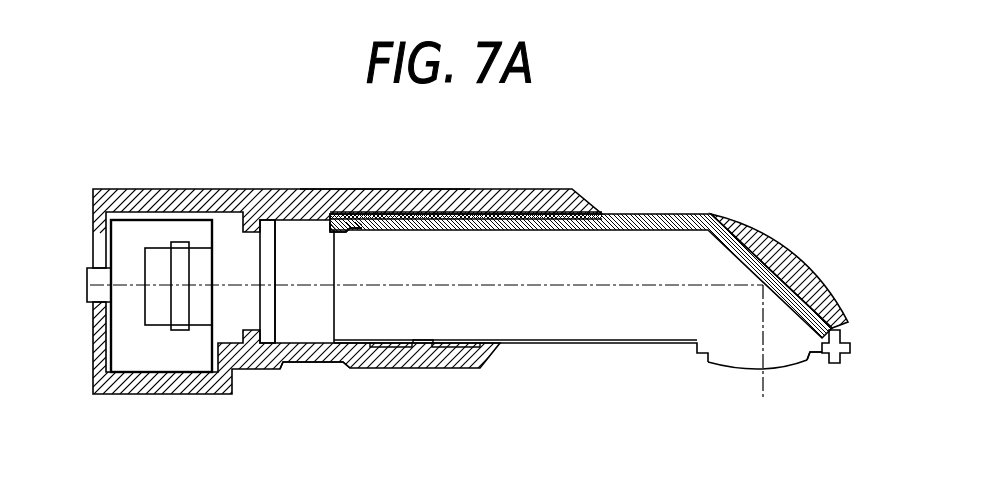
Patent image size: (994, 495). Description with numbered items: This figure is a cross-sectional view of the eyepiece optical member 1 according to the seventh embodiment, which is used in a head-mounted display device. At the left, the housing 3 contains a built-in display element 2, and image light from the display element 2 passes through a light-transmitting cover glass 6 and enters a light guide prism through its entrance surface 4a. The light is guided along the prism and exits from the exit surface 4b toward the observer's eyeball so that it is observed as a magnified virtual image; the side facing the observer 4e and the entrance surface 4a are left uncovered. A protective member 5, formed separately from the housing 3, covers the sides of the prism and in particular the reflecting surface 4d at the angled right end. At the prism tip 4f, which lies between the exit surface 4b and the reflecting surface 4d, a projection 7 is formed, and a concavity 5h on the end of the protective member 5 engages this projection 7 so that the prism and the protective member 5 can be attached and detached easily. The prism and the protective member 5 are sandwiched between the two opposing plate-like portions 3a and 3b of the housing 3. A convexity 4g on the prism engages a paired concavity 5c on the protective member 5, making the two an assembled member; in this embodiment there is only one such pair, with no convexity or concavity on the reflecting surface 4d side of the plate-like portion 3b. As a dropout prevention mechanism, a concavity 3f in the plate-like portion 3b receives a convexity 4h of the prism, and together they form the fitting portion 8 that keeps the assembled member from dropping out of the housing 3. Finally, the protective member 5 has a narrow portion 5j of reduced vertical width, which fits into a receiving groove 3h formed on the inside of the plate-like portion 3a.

The eyepiece optical member 1 is at (545, 148).
The display element 2 is at (89, 286).
The housing 3 is at (214, 188).
The plate-like portion 3a is at (376, 188).
The plate-like portion 3b is at (330, 369).
The concavity 3f is at (384, 342).
The receiving groove 3h is at (459, 188).
The entrance surface 4a is at (333, 272).
The exit surface 4b is at (739, 372).
The reflecting surface 4d is at (774, 259).
The side facing the observer 4e is at (618, 344).
The prism tip 4f is at (836, 354).
The convexity 4g is at (356, 232).
The convexity 4h is at (424, 344).
The protective member 5 is at (746, 232).
The concavity 5c is at (356, 232).
The concavity 5h is at (819, 354).
The narrow portion 5j is at (459, 188).
The cover glass 6 is at (259, 272).
The projection 7 is at (819, 354).
The fitting portion 8 is at (428, 352).